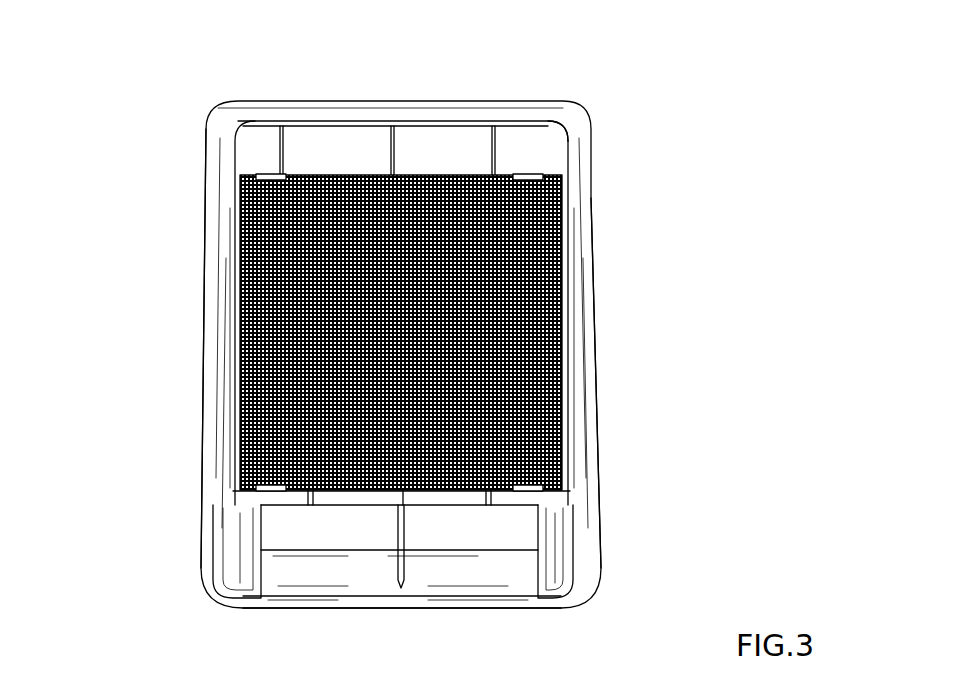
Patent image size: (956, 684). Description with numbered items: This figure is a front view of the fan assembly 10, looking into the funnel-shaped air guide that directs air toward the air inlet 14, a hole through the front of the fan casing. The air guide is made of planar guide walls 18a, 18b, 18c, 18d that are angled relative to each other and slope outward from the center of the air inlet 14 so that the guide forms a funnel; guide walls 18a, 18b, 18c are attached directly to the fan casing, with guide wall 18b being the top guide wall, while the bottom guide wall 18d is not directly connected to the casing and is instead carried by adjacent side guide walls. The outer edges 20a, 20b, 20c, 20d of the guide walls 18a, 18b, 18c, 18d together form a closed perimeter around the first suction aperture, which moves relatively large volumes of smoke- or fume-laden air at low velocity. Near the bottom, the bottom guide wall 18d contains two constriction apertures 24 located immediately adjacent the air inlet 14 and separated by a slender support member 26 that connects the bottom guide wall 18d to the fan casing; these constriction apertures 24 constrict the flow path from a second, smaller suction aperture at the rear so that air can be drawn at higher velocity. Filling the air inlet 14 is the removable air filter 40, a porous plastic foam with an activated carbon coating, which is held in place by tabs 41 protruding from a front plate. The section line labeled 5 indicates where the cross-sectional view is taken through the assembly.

The fan assembly 10 is at (712, 67).
The air inlet 14 is at (535, 150).
The guide wall 18a is at (595, 180).
The top guide wall 18b is at (490, 78).
The guide wall 18c is at (190, 255).
The bottom guide wall 18d is at (268, 566).
The outer edge 20a is at (561, 222).
The outer edge 20b is at (522, 110).
The outer edge 20c is at (215, 312).
The outer edge 20d is at (285, 592).
The constriction apertures 24 is at (325, 525).
The slender support member 26 is at (392, 522).
The air filter 40 is at (357, 165).
The tabs 41 is at (264, 165).
The section line 5- 5 is at (462, 80).